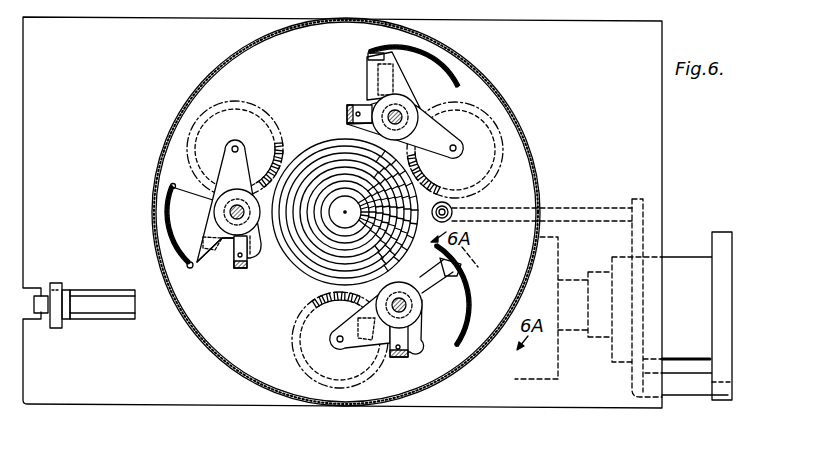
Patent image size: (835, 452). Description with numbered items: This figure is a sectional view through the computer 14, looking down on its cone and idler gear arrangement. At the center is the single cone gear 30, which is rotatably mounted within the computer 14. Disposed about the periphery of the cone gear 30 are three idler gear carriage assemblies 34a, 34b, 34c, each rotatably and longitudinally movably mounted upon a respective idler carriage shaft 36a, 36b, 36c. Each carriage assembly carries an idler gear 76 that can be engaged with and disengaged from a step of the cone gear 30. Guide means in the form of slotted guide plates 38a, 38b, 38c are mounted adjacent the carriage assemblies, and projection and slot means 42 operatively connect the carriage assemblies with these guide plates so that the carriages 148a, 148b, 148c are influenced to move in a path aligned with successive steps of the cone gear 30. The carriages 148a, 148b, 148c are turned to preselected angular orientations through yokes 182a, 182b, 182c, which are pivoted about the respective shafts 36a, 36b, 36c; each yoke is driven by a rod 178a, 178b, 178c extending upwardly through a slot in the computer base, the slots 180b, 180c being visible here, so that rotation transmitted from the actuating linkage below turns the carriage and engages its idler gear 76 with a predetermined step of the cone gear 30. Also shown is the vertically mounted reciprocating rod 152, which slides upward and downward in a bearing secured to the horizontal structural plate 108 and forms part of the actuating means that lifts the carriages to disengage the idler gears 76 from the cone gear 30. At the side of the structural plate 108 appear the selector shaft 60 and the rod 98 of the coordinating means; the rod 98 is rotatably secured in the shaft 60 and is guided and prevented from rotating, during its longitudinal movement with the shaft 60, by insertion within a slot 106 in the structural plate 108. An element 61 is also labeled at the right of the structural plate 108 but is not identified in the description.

The computer 14 is at (506, 108).
The structural plate 108 is at (652, 150).
The mounting bracket 61 is at (686, 262).
The slot 106 is at (103, 290).
The rod 98 is at (58, 328).
The selector shaft 60 is at (107, 308).
The cone gear 30 is at (323, 152).
The idler gear 76 is at (249, 114).
The idler gear carriage assembly 34a is at (401, 112).
The idler gear carriage assembly 34b is at (352, 372).
The idler gear carriage assembly 34c is at (210, 210).
The idler carriage shaft 36a is at (401, 114).
The idler carriage shaft 36b is at (403, 307).
The idler carriage shaft 36c is at (230, 211).
The slotted guide plate 38a is at (453, 73).
The slotted guide plate 38b is at (465, 316).
The slotted guide plate 38c is at (172, 226).
The idler carriage 148a is at (388, 108).
The idler carriage 148b is at (412, 338).
The idler carriage 148c is at (228, 162).
The rod 178a is at (350, 118).
The rod 178b is at (393, 356).
The rod 178c is at (215, 252).
The slot 180b is at (375, 341).
The slot 180c is at (216, 260).
The yoke 182a is at (355, 104).
The yoke 182b is at (410, 353).
The yoke 182c is at (248, 263).
The reciprocating rod 152 is at (455, 219).
The projection and slot means 42 is at (186, 270).